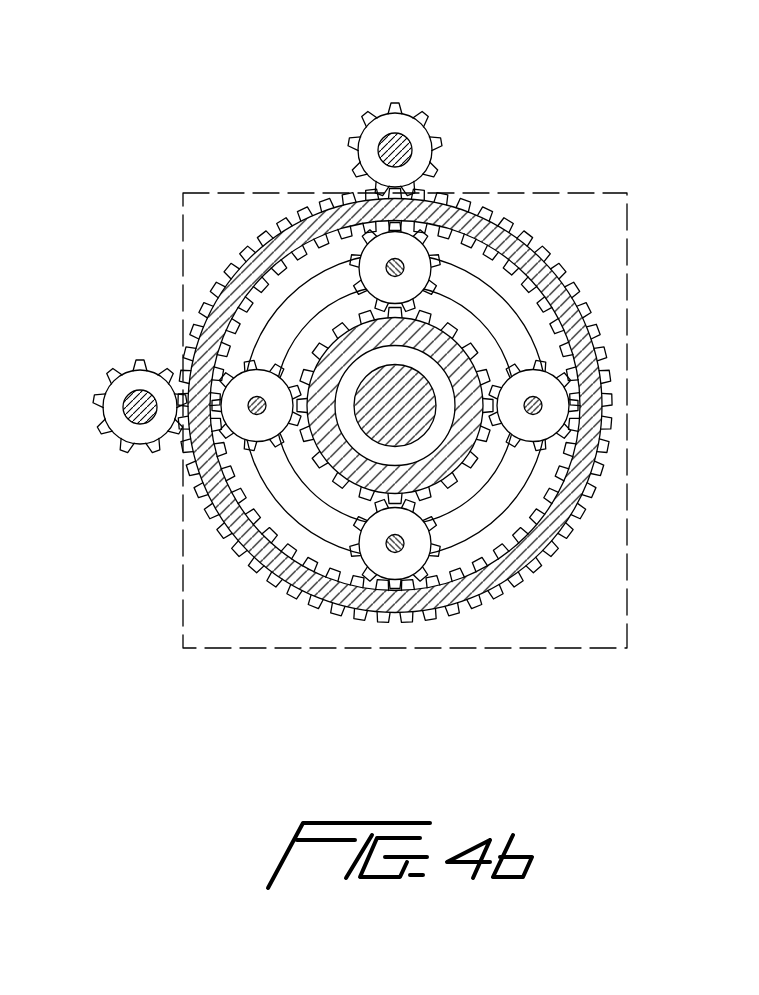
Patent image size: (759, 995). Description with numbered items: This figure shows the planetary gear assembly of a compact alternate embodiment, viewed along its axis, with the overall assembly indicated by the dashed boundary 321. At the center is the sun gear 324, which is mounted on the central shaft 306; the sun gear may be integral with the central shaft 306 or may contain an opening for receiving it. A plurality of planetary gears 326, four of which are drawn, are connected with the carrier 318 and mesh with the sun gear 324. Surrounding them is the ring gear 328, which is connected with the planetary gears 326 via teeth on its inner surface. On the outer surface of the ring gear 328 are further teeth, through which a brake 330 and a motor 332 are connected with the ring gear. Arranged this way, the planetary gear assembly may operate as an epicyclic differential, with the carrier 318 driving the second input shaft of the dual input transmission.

The central shaft 306 is at (385, 390).
The carrier 318 is at (510, 482).
The planetary gear set 321 is at (183, 590).
The sun gear 324 is at (445, 480).
The planetary gears 326 is at (575, 343).
The ring gear 328 is at (556, 258).
The brake 330 is at (113, 367).
The motor 332 is at (430, 115).